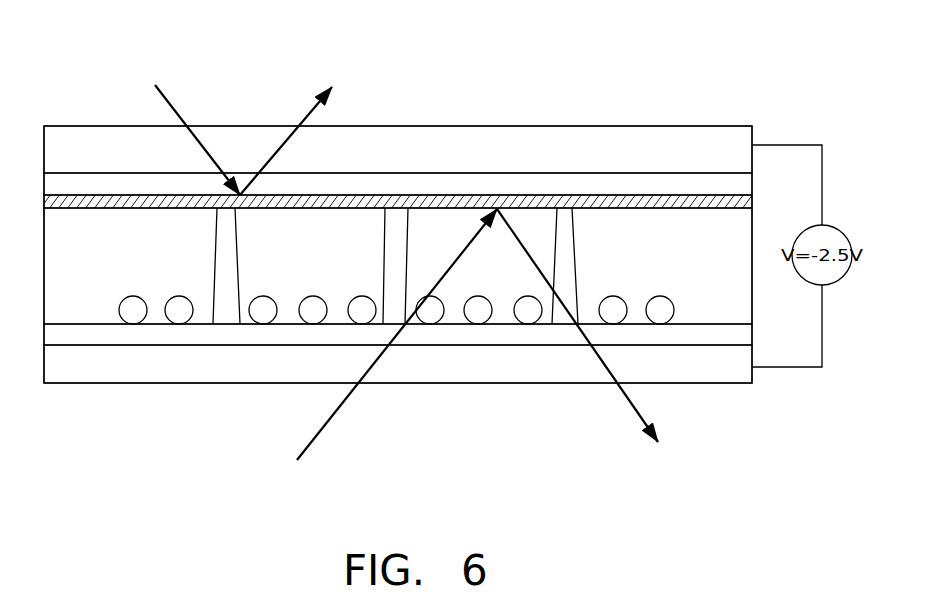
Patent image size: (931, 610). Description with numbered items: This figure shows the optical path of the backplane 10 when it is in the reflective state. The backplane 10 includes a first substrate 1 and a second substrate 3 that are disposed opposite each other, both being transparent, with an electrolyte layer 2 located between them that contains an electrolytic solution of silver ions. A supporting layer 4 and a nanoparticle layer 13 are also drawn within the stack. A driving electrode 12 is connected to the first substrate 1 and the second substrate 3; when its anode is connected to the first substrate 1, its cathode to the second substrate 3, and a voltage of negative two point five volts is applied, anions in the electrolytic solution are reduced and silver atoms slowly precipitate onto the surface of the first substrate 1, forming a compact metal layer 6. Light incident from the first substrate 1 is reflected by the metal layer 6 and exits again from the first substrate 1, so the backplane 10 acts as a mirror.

The first substrate 1 is at (542, 148).
The electrolyte layer 2 is at (337, 242).
The second substrate 3 is at (267, 360).
The supporting layer 4 is at (573, 326).
The metal layer 6 is at (697, 193).
The backplane 10 is at (118, 78).
The driving electrode 12 is at (592, 183).
The nanoparticle layer 13 is at (365, 330).